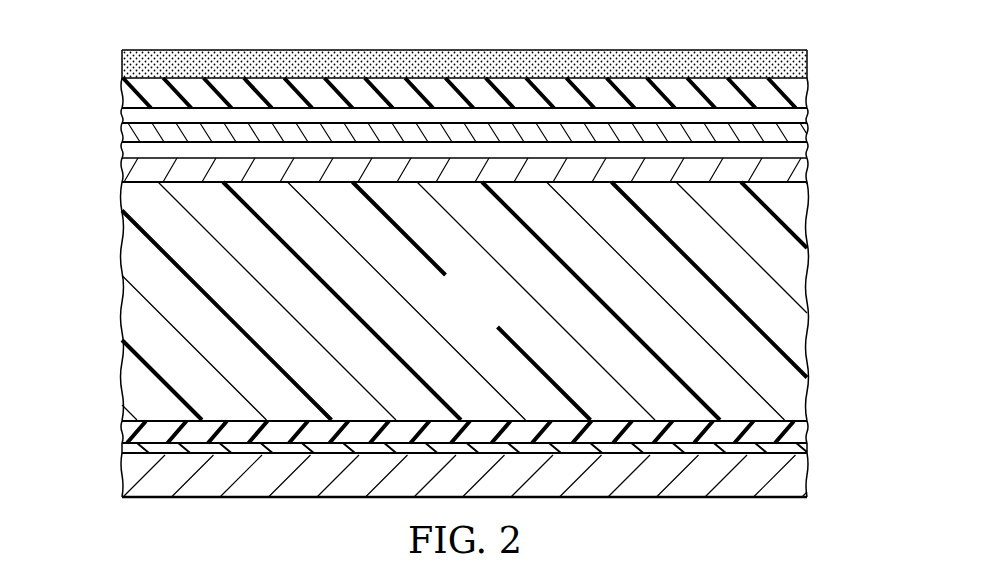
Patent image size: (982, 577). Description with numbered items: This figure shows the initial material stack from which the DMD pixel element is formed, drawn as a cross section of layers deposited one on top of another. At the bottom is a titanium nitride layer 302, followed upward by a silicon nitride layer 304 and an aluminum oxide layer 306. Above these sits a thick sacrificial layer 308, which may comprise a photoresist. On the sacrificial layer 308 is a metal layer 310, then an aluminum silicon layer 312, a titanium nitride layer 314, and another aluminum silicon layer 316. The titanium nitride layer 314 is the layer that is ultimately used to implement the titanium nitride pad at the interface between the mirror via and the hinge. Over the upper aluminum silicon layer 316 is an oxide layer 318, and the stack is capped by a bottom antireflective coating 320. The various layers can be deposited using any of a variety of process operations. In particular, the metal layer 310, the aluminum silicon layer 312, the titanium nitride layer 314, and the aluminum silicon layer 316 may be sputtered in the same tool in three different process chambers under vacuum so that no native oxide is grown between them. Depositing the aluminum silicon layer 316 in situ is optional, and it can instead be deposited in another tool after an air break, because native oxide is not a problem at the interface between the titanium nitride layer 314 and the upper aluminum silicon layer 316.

The titanium nitride layer 302 is at (811, 472).
The silicon nitride layer 304 is at (122, 448).
The aluminum oxide layer 306 is at (809, 433).
The sacrificial layer 308 is at (490, 315).
The metal layer 310 is at (808, 172).
The aluminum silicon layer 312 is at (122, 147).
The titanium nitride layer 314 is at (809, 132).
The aluminum silicon layer 316 is at (122, 117).
The oxide layer 318 is at (809, 92).
The bottom antireflective coating 320 is at (122, 68).